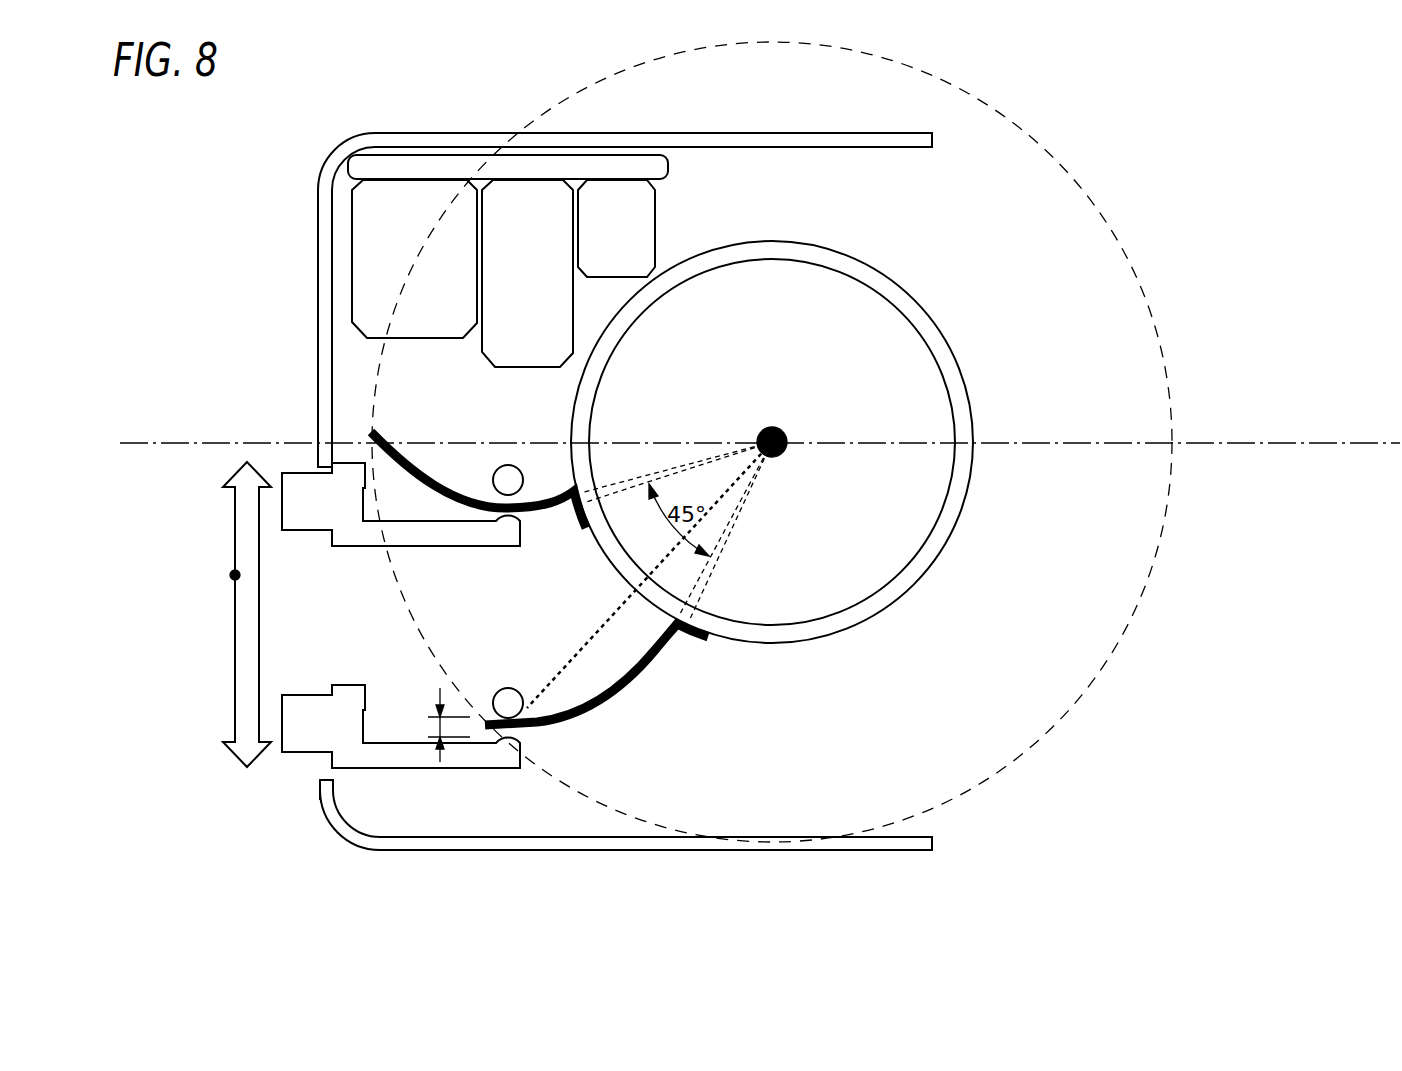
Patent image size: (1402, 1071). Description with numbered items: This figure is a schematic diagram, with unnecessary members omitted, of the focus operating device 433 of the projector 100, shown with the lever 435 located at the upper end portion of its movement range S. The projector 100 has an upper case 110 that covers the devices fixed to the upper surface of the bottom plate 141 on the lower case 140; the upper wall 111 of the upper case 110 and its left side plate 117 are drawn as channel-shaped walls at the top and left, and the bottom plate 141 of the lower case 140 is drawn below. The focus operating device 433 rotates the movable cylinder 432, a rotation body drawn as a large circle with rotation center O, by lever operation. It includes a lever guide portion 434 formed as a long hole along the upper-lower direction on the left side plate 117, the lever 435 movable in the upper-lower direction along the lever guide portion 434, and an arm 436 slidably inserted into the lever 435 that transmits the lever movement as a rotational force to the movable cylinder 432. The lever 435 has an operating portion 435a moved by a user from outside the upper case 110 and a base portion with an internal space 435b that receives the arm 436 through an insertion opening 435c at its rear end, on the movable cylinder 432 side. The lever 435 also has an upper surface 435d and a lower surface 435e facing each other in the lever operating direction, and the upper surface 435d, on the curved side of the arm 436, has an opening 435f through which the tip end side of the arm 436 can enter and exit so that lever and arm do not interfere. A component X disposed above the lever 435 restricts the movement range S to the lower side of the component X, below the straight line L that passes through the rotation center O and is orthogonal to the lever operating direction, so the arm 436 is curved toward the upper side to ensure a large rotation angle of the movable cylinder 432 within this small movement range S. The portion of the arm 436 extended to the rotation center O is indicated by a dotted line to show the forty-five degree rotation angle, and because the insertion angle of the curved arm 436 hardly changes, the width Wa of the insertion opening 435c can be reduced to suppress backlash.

The projector 100 is at (910, 123).
The upper case 110 is at (477, 132).
The upper wall of housing 111 is at (625, 261).
The left side plate 117 is at (318, 295).
The lower case 140 is at (428, 851).
The bottom plate 141 is at (626, 842).
The movable cylinder 432 is at (963, 507).
The focus operating device 433 is at (262, 780).
The lever guide portion 434 is at (330, 773).
The lever 435 is at (365, 450).
The operating portion 435a is at (300, 473).
The internal space 435b is at (365, 482).
The insertion opening 435c is at (515, 495).
The upper surface 435d is at (417, 520).
The lower surface 435e is at (418, 548).
The opening 435f is at (475, 451).
The arm 436 is at (613, 703).
The component X is at (552, 197).
The straight line L is at (148, 443).
The rotation center O is at (787, 457).
The movement range S is at (232, 577).
The width Wa is at (437, 728).